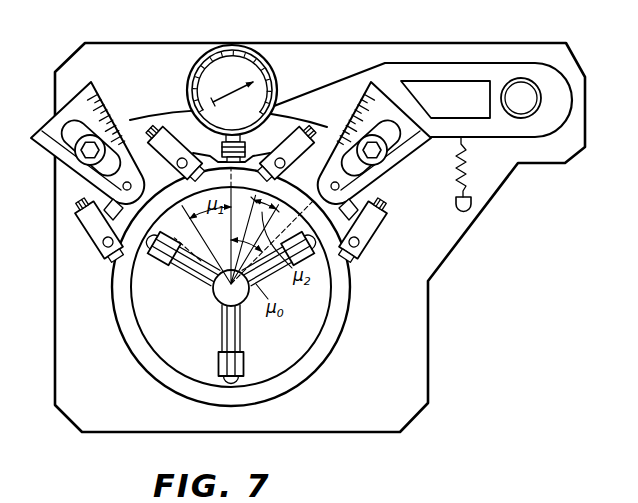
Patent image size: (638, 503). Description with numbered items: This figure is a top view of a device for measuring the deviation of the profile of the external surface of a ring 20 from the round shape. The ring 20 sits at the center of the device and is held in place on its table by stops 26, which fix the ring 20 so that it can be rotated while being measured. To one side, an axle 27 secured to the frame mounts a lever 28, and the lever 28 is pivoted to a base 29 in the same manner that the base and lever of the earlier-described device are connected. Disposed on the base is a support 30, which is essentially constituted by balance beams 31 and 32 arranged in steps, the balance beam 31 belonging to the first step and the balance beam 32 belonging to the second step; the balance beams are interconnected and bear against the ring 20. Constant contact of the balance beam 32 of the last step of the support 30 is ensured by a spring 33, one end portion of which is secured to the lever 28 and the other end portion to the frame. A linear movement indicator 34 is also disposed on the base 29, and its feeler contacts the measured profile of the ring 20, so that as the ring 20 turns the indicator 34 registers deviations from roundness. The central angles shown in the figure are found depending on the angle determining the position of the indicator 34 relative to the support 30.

The ring 20 is at (337, 337).
The stops 26 is at (163, 264).
The axle 27 is at (522, 90).
The lever 28 is at (401, 70).
The base 29 is at (173, 115).
The support 30 is at (72, 235).
The balance beam 31 is at (352, 200).
The balance beam 32 is at (357, 254).
The spring 33 is at (466, 168).
The linear movement indicator 34 is at (263, 57).